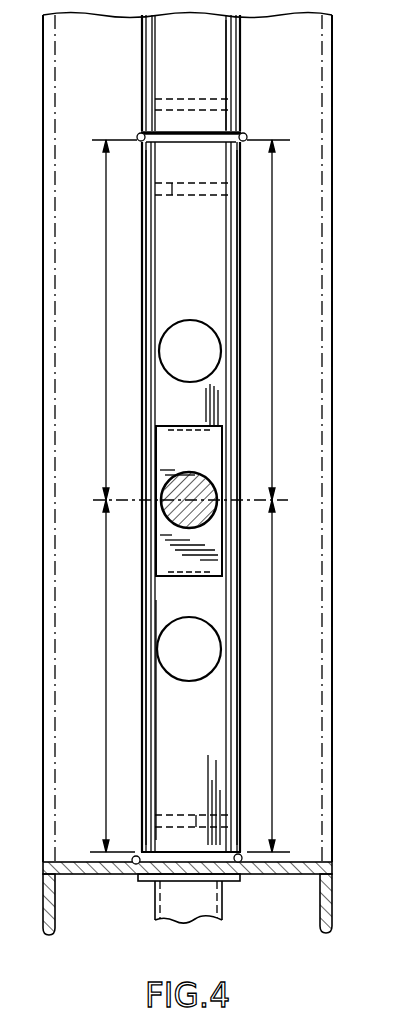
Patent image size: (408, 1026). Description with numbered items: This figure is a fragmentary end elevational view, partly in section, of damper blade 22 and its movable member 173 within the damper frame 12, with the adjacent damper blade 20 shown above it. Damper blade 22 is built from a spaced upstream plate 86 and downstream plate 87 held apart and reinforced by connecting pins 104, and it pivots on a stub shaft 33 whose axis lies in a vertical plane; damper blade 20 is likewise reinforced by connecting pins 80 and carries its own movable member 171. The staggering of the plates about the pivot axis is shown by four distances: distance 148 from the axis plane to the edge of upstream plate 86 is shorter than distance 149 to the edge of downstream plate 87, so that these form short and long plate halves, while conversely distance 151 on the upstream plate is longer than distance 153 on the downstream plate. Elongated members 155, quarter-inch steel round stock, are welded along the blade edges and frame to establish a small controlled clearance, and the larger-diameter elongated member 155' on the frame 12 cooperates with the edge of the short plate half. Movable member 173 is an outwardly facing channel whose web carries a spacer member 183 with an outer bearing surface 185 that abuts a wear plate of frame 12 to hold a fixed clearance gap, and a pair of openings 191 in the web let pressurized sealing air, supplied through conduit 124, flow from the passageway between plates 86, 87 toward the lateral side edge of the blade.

The frame 12 is at (325, 47).
The damper blade 20 is at (136, 52).
The damper blade 22 is at (135, 236).
The stub shaft 33 is at (190, 474).
The connecting pins 80 is at (184, 99).
The upstream plate 86 is at (142, 382).
The downstream plate 87 is at (238, 690).
The connecting pins 104 is at (172, 196).
The conduit 124 is at (198, 906).
The distance 148 is at (106, 305).
The distance 149 is at (273, 345).
The distance 151 is at (106, 608).
The distance 153 is at (272, 592).
The elongated members 155 is at (186, 501).
The elongated members 155' is at (263, 883).
The movable member 171 is at (212, 64).
The movable member 173 is at (202, 752).
The spacer member 183 is at (203, 426).
The outer bearing surface 185 is at (210, 450).
The openings 191 is at (188, 321).